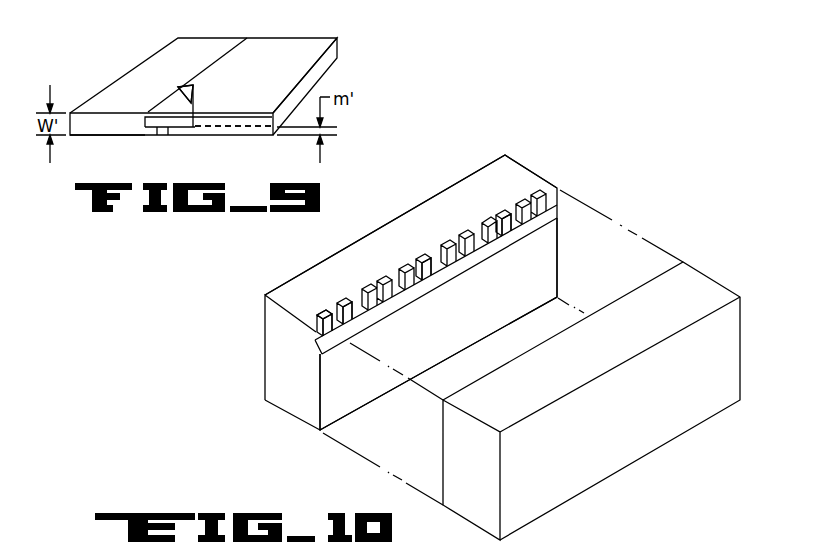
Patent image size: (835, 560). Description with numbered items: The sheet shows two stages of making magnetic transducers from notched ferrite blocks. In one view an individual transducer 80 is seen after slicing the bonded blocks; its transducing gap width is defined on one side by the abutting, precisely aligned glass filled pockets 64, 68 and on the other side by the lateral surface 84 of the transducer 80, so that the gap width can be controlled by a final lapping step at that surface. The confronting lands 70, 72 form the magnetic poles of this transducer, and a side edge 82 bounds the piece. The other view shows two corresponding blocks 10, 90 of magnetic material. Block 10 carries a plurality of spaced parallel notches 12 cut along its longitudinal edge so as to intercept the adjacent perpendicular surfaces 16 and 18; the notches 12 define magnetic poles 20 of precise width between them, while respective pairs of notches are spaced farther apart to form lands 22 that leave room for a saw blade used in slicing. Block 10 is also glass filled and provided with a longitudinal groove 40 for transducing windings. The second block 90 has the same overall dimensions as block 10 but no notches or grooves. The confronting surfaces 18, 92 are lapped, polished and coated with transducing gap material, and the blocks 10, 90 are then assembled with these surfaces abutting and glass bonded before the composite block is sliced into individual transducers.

In FIG. 9, the transducer 80 is at (317, 34).
In FIG. 9, the side edge of blank 82 is at (333, 70).
In FIG. 9, the glass filled notch or pocket 64 is at (188, 100).
In FIG. 9, the glass filled notch or pocket 68 is at (185, 94).
In FIG. 9, the confronting pole 70 is at (150, 137).
In FIG. 9, the confronting pole 72 is at (182, 130).
In FIG. 9, the lateral surface 84 is at (120, 137).
In FIG. 10, the block 10 is at (525, 177).
In FIG. 10, the notches 12 is at (494, 222).
In FIG. 10, the surface 16 is at (383, 261).
In FIG. 10, the surface 18 is at (465, 331).
In FIG. 10, the magnetic poles 20 is at (333, 283).
In FIG. 10, the lands 22 is at (517, 203).
In FIG. 10, the groove 40 is at (317, 349).
In FIG. 10, the second block 90 is at (703, 282).
In FIG. 10, the confronting surface 92 is at (442, 446).